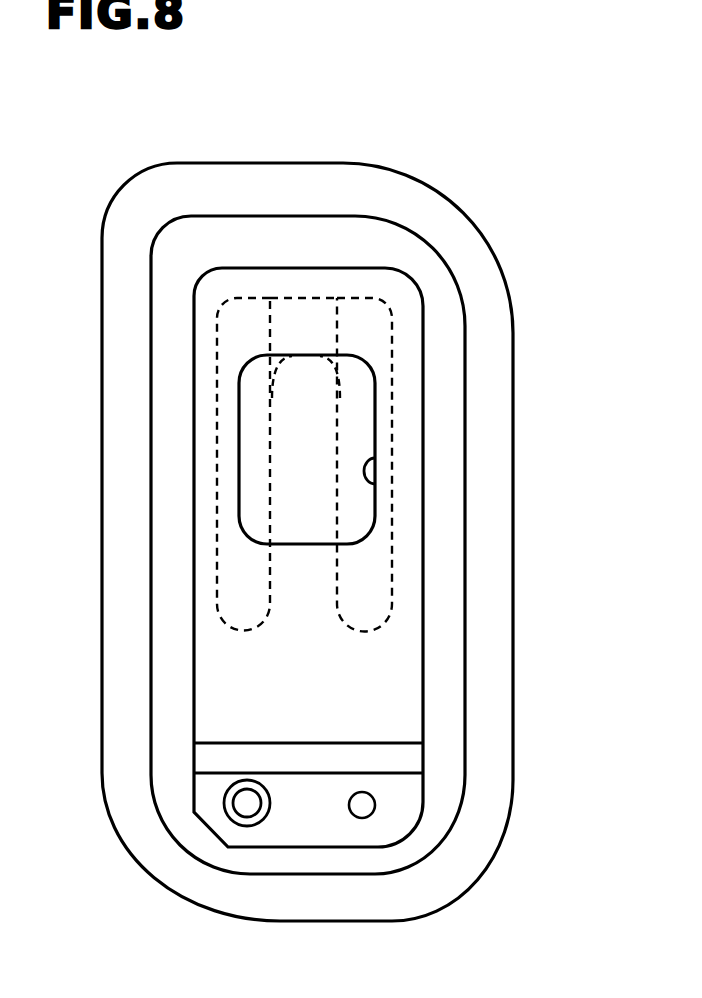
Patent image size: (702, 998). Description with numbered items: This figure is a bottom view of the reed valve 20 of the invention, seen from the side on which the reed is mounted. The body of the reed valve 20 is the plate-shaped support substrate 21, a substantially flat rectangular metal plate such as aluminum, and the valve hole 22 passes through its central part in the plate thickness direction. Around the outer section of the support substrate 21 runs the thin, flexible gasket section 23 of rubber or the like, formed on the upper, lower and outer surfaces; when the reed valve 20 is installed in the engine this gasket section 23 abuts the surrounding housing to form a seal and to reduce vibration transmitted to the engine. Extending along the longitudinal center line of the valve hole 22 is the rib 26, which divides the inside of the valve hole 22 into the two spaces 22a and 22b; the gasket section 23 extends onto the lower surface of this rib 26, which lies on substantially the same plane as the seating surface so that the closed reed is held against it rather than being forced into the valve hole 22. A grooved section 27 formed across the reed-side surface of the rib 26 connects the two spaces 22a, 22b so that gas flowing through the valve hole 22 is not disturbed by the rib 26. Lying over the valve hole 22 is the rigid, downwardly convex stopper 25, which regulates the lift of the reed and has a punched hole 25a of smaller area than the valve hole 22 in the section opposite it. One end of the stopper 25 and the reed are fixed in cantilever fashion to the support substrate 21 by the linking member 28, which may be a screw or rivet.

The reed valve 20 is at (516, 153).
The support substrate 21 is at (173, 553).
The valve hole 22 is at (370, 100).
The space 22a is at (243, 318).
The space 22b is at (368, 312).
The gasket section 23 is at (490, 762).
The stopper 25 is at (405, 302).
The punched hole 25a is at (368, 484).
The rib 26 is at (320, 573).
The grooved section 27 is at (313, 338).
The linking member 28 is at (247, 806).